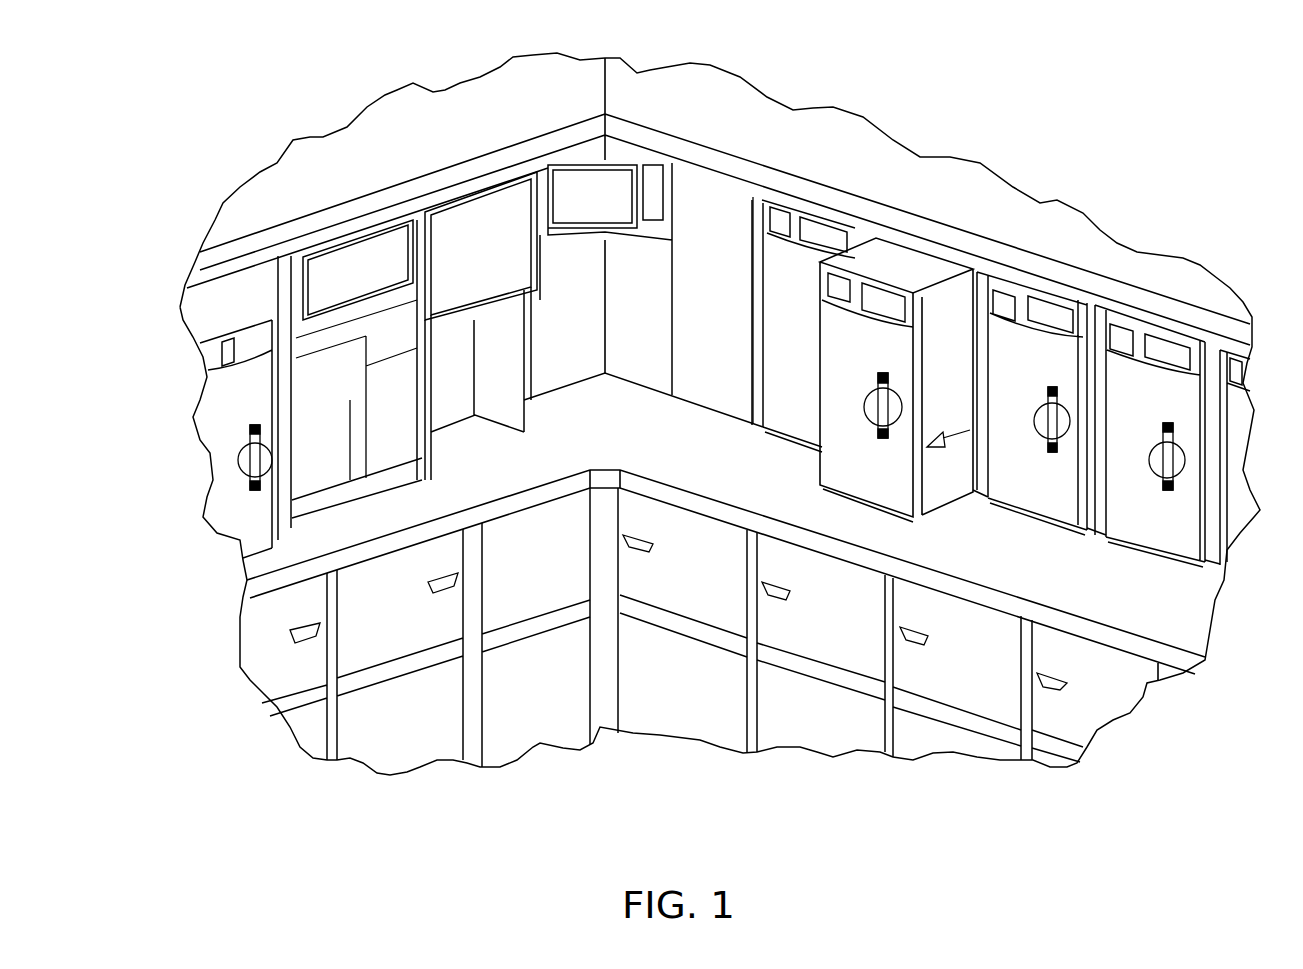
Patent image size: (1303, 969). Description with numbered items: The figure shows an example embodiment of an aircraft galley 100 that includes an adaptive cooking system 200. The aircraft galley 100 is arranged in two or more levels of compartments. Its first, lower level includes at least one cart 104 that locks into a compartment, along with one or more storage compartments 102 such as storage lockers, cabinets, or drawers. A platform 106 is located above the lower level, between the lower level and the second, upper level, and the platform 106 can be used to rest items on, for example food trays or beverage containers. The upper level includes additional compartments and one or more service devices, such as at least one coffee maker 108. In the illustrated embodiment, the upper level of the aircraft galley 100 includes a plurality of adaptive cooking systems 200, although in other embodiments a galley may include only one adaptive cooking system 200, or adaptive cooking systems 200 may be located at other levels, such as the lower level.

The aircraft galley 100 is at (437, 67).
The storage compartments 102 is at (402, 753).
The cart 104 is at (524, 718).
The platform 106 is at (497, 488).
The coffee maker 108 is at (308, 400).
The adaptive cooking system 200 is at (908, 263).